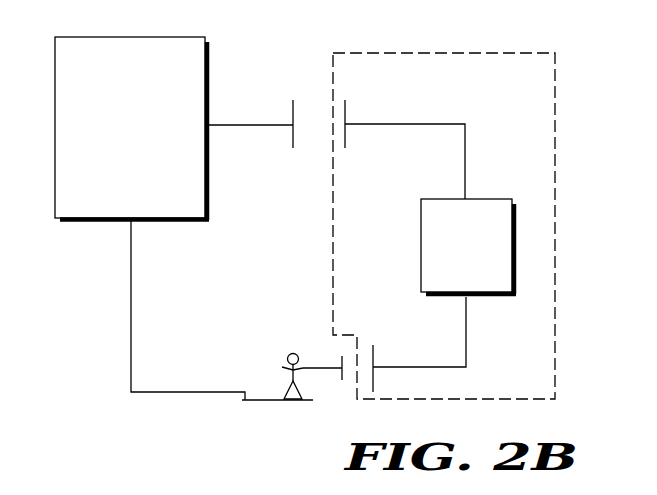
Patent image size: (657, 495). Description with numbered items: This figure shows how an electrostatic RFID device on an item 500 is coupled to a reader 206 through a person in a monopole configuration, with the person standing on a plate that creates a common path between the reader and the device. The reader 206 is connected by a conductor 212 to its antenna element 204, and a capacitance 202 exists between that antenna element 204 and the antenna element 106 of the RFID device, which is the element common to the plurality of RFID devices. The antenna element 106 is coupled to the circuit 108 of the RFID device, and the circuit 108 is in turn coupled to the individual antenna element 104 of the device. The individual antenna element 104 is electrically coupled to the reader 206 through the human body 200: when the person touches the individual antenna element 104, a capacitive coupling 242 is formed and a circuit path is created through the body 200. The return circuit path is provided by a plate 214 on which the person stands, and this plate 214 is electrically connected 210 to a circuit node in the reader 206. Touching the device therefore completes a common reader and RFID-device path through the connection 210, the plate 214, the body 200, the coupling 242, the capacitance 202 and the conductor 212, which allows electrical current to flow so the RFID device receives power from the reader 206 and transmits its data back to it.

The reader 206 is at (77, 36).
The reader circuit path 212 is at (260, 123).
The antenna element of the reader 204 is at (292, 107).
The capacitance 202 is at (323, 144).
The item 500 is at (556, 119).
The antenna element 106 is at (346, 106).
The circuit 108 is at (516, 212).
The capacitive coupling 242 is at (367, 343).
The individual antenna element 104 is at (374, 382).
The human body 200 is at (291, 352).
The plate 214 is at (262, 402).
The electrical connection 210 is at (182, 394).